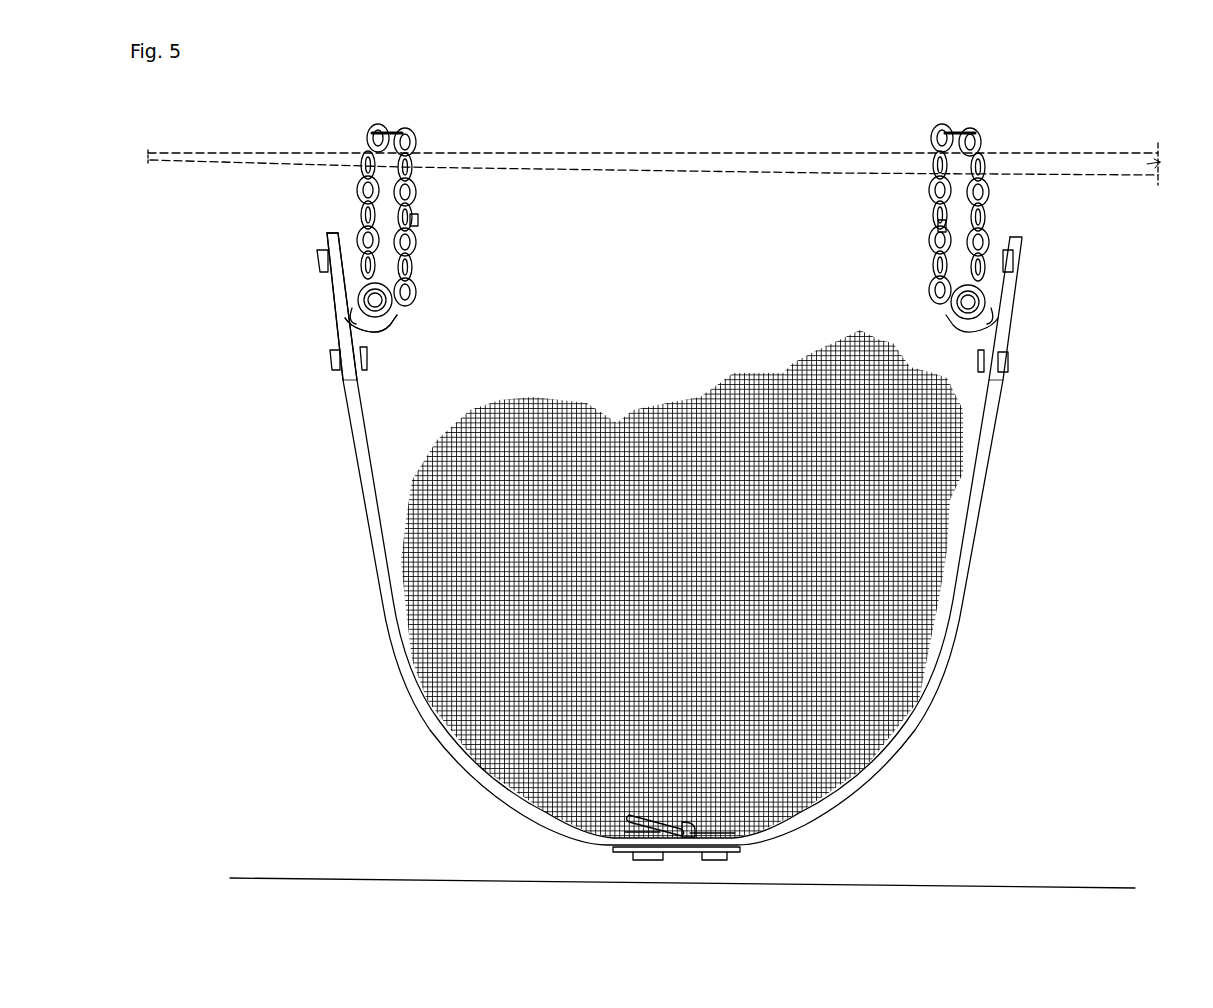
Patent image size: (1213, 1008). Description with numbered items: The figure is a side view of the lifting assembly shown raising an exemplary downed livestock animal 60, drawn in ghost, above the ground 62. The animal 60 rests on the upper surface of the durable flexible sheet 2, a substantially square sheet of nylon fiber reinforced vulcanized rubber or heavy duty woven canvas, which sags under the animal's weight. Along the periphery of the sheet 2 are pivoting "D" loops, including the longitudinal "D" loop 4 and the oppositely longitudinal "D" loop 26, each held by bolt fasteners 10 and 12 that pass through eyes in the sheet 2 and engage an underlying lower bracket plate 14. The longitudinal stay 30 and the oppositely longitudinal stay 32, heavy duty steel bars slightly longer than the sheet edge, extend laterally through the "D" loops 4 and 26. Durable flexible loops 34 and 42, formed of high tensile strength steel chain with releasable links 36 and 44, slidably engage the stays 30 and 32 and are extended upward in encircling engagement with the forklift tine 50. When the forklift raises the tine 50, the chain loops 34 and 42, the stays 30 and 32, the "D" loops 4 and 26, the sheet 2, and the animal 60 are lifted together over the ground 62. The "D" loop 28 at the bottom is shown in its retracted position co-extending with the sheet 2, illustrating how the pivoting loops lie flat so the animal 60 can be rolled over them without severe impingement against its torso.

The durable flexible sheet component 2 is at (390, 627).
The "D" loop 4 is at (367, 317).
The bolt fastener 10 is at (333, 352).
The bolt fastener 12 is at (320, 258).
The lower bracket plate 14 is at (327, 305).
The "D" loop 26 is at (945, 300).
The "D" loop 28 is at (673, 830).
The longitudinal stay 30 is at (385, 292).
The oppositely longitudinal stay 32 is at (973, 300).
The durable flexible loop 34 is at (393, 133).
The releasable link 36 is at (420, 218).
The durable flexible loop 42 is at (953, 333).
The releasable link 44 is at (947, 227).
The forklift tine 50 is at (655, 157).
The downed livestock animal 60 is at (655, 440).
The ground 62 is at (395, 878).